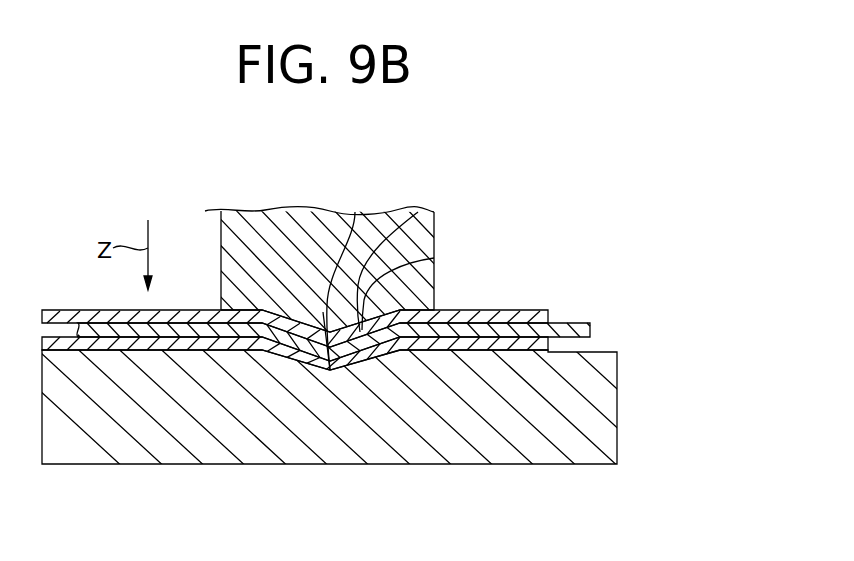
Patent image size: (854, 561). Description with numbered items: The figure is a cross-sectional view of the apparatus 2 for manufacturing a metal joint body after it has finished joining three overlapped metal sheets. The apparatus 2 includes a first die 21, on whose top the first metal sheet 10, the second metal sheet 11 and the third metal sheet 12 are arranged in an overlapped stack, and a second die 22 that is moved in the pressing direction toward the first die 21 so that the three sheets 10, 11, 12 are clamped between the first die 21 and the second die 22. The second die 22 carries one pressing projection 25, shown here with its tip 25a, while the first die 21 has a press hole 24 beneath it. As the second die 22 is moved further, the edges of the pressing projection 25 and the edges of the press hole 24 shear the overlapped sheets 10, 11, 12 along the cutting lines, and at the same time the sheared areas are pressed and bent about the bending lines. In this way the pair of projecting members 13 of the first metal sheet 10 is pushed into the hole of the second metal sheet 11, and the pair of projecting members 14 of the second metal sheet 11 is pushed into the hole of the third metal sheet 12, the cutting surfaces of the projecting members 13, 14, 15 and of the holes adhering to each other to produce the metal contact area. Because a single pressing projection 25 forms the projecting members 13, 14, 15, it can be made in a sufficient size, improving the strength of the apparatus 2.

The apparatus for manufacturing metal joint body 2 is at (498, 193).
The first metal sheet 10 is at (545, 309).
The second metal sheet 11 is at (590, 328).
The third metal sheet 12 is at (547, 343).
The projecting members of the first metal sheet 13 is at (290, 322).
The projecting members of the second metal sheet 14 is at (250, 355).
The projecting members 15 is at (306, 360).
The first die 21 is at (617, 410).
The second die 22 is at (437, 238).
The press hole 24 is at (328, 372).
The pressing projection 25 is at (418, 212).
The tip of protrusion 25a is at (355, 212).